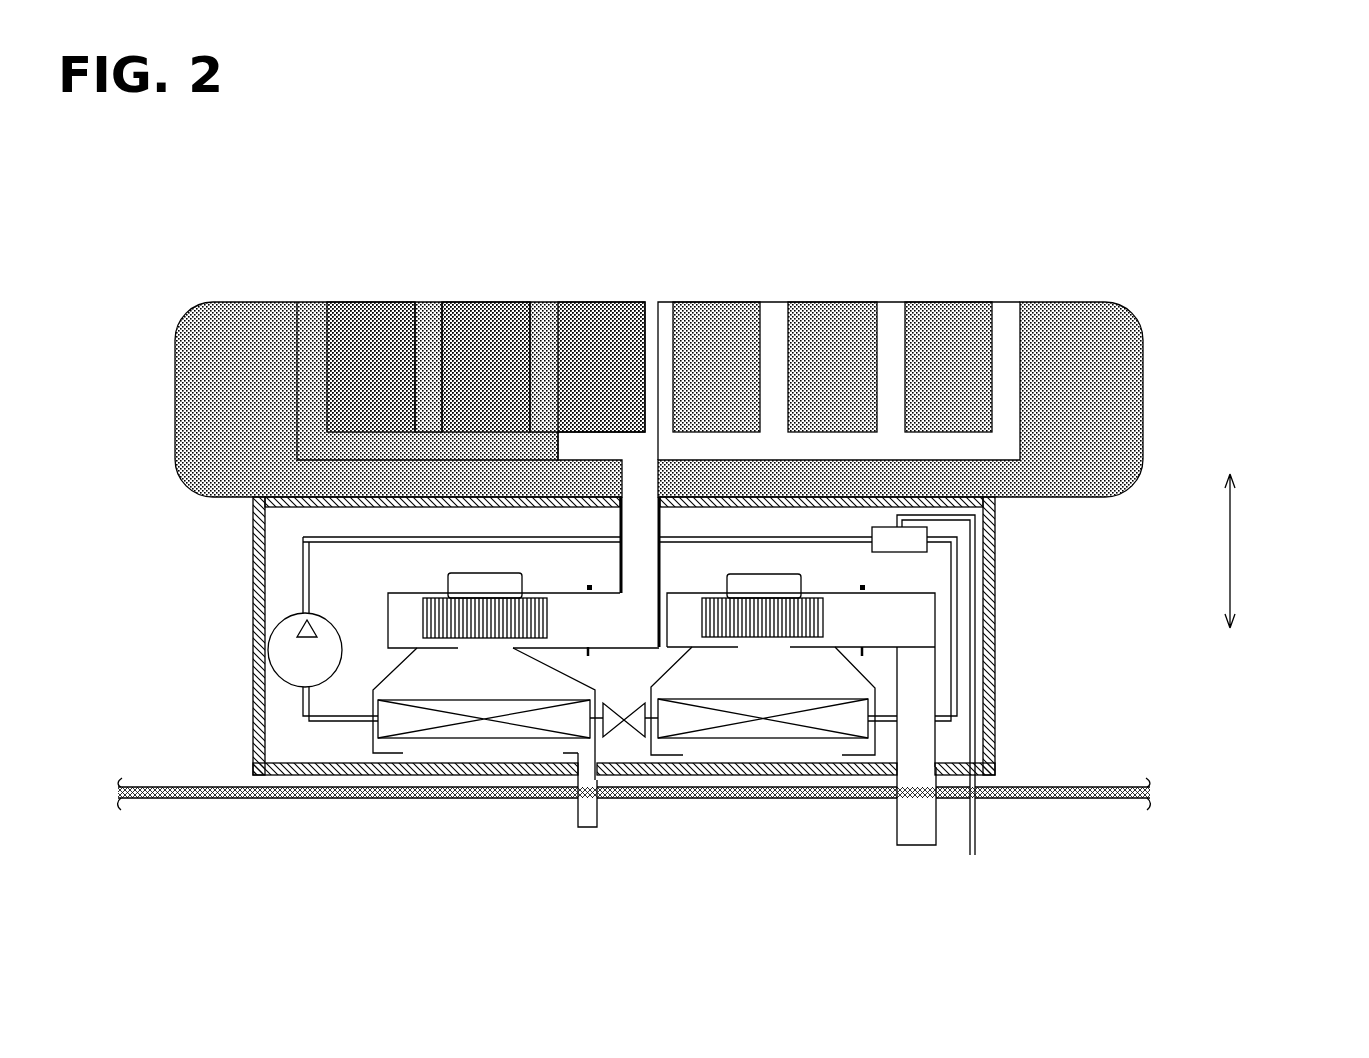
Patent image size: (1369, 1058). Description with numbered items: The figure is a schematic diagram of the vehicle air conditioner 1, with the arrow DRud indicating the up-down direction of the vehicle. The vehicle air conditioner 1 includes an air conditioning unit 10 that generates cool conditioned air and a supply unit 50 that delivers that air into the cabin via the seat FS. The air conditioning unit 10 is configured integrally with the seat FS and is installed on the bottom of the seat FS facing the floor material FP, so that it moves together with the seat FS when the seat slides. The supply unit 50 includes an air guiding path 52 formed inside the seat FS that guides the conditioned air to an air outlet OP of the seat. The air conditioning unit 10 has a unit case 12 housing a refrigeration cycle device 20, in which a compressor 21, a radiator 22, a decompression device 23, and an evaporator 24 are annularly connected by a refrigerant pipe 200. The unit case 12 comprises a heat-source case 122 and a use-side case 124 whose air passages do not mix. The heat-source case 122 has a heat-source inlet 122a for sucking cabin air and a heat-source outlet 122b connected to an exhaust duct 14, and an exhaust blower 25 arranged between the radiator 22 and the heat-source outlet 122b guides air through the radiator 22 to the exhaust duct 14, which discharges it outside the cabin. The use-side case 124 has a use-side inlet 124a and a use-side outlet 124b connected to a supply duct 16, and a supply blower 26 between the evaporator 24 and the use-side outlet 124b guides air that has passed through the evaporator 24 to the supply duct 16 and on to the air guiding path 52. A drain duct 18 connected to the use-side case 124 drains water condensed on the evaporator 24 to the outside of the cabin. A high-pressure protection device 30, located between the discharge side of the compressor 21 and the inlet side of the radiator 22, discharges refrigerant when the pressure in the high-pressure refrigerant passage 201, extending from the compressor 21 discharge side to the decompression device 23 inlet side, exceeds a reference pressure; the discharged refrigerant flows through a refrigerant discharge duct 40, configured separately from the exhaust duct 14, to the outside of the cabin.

The vehicle air conditioner 1 is at (205, 563).
The air conditioning unit 10 is at (999, 612).
The unit case 12 is at (253, 731).
The exhaust duct 14 is at (896, 822).
The supply duct 16 is at (620, 557).
The drain duct 18 is at (577, 812).
The refrigeration cycle device 20 is at (300, 590).
The compressor 21 is at (276, 682).
The radiator 22 is at (737, 740).
The decompression device 23 is at (630, 740).
The evaporator 24 is at (452, 740).
The exhaust blower 25 is at (716, 597).
The supply blower 26 is at (430, 597).
The high-pressure protection device 30 is at (895, 553).
The refrigerant discharge duct 40 is at (980, 828).
The supply unit 50 is at (796, 364).
The air guiding path 52 is at (660, 368).
The heat-source case 122 is at (690, 593).
The heat-source inlet 122a is at (688, 756).
The heat-source outlet 122b is at (860, 588).
The use-side case 124 is at (388, 605).
The use-side inlet 124a is at (420, 775).
The use-side outlet 124b is at (587, 588).
The refrigerant pipe 200 is at (300, 556).
The high-pressure refrigerant passage 201 is at (440, 537).
The air outlet OP is at (648, 300).
The seat FS is at (1118, 300).
The floor material FP is at (1098, 787).
The up-down direction DRud is at (1232, 549).